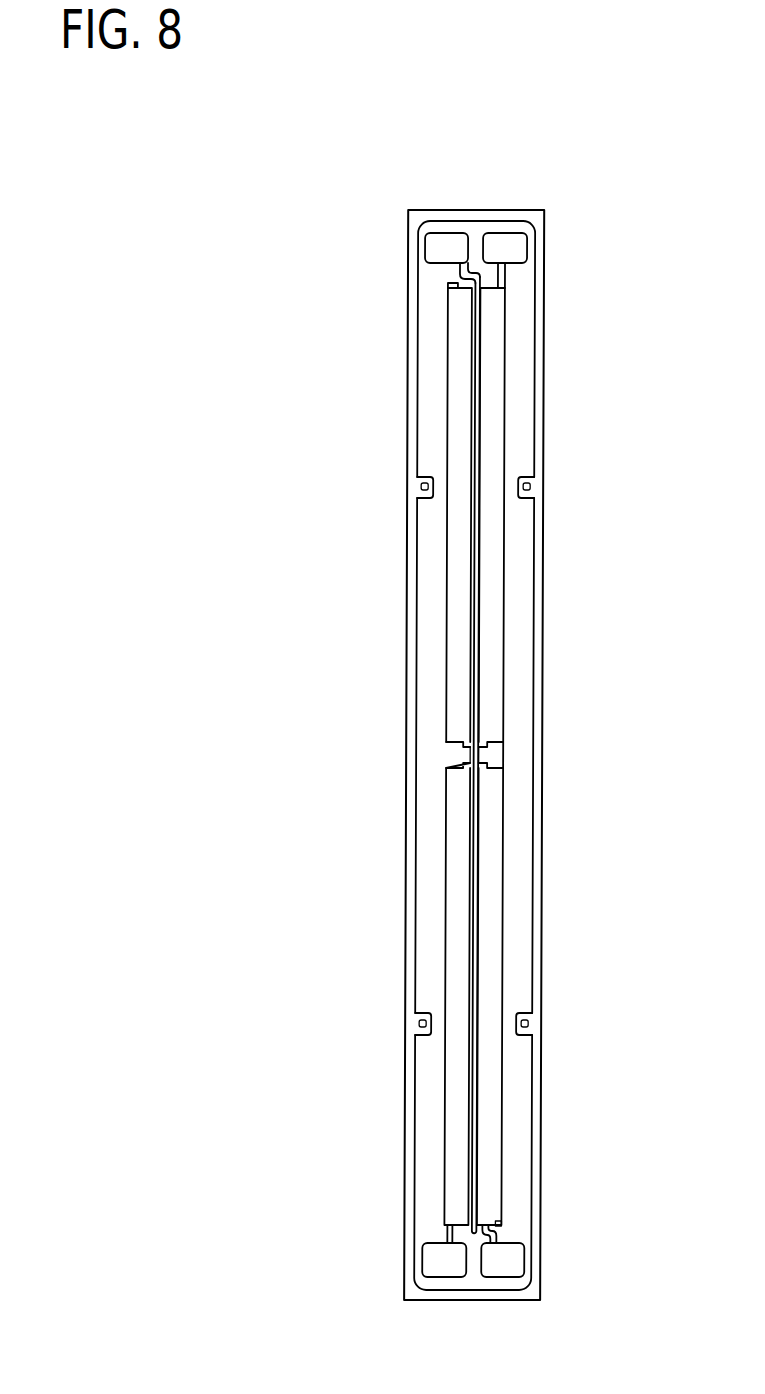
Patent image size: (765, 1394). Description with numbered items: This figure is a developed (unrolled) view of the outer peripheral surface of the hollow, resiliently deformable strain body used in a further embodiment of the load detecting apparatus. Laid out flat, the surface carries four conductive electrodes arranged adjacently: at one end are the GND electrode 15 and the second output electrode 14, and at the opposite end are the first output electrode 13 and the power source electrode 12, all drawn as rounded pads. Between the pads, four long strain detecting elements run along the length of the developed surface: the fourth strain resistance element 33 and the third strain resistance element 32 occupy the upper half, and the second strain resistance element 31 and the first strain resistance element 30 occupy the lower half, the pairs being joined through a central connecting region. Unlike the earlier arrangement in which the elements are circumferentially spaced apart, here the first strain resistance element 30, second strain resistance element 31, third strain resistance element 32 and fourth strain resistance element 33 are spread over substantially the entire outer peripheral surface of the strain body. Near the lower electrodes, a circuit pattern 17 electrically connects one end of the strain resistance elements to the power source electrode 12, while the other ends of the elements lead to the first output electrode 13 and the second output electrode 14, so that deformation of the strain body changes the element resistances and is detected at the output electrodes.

The power source electrode 12 is at (510, 1265).
The first output electrode 13 is at (440, 1260).
The second output electrode 14 is at (512, 248).
The GND electrode 15 is at (438, 248).
The circuit pattern 17 is at (482, 1240).
The first strain resistance element 30 is at (493, 915).
The second strain resistance element 31 is at (455, 915).
The third strain resistance element 32 is at (493, 440).
The fourth strain resistance element 33 is at (463, 425).